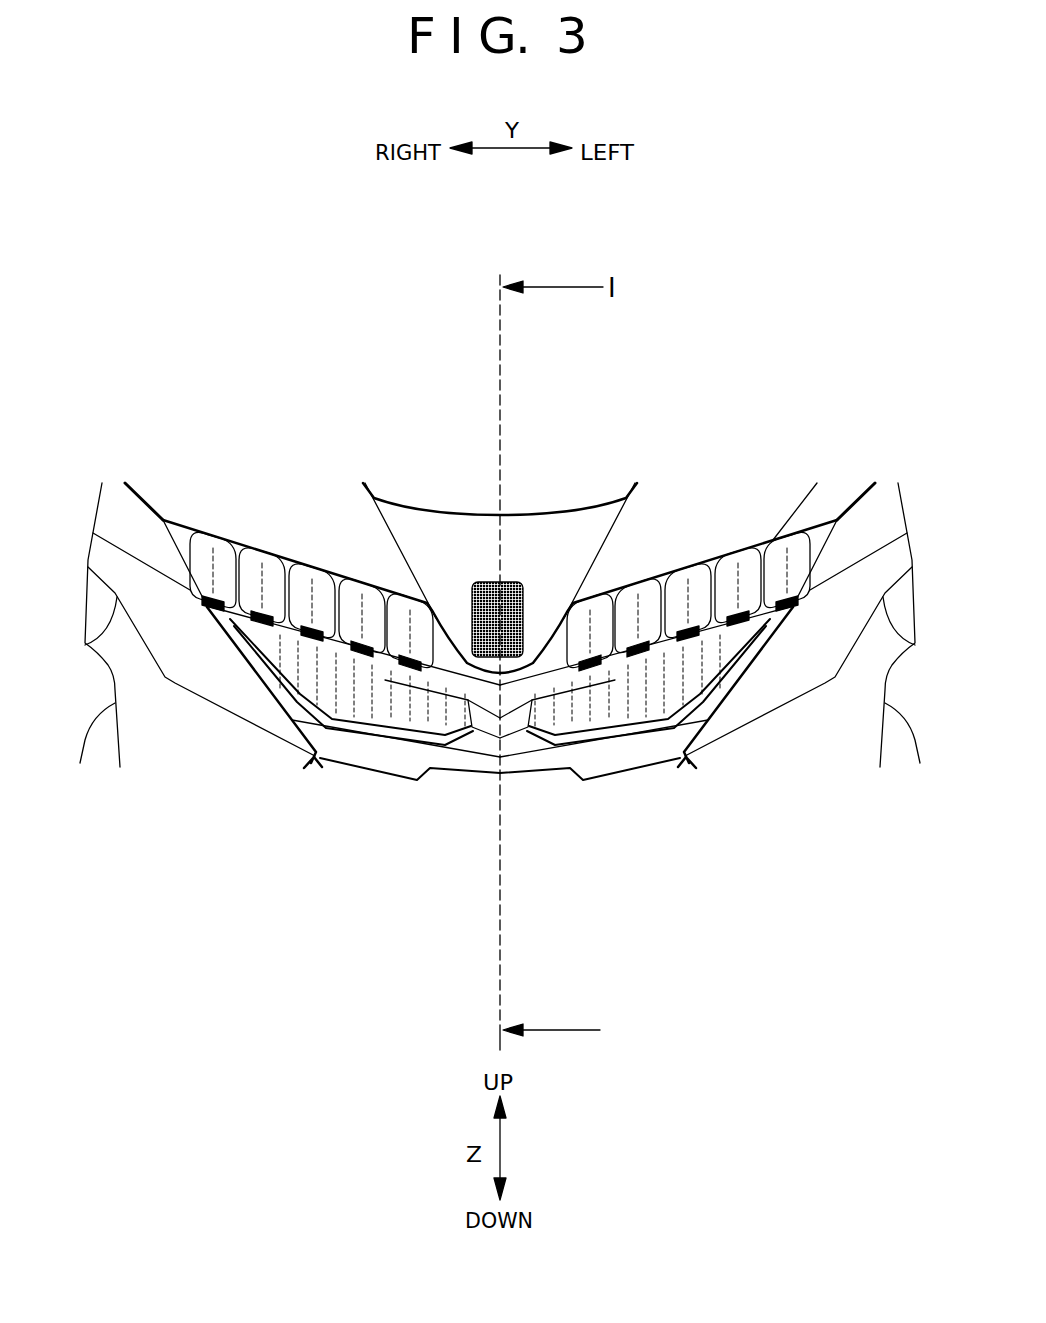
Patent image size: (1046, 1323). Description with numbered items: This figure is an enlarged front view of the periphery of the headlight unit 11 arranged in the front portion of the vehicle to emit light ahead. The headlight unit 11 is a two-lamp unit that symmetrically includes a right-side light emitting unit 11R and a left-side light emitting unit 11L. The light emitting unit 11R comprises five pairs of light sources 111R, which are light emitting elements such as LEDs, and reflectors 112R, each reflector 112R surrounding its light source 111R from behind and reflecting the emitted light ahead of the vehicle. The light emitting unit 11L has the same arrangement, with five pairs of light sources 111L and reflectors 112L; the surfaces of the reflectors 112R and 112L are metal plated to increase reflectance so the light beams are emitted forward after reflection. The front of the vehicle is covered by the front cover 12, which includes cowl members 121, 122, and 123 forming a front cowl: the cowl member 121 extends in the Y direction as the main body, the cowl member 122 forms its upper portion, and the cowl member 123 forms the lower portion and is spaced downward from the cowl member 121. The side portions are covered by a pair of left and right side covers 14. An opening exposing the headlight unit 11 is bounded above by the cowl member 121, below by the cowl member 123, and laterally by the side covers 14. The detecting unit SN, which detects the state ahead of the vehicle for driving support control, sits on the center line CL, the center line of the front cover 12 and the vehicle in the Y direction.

The headlight unit 11 is at (559, 765).
The right-side light emitting unit 11R is at (292, 548).
The left-side light emitting unit 11L is at (703, 545).
The light source 111R is at (195, 600).
The light source 111L is at (643, 600).
The reflector 112R is at (184, 535).
The reflector 112L is at (658, 574).
The front cover 12 is at (789, 446).
The side cover 14 is at (207, 683).
The cowl member 121 is at (575, 550).
The cowl member 122 is at (560, 478).
The cowl member 123 is at (613, 760).
The detecting unit SN is at (490, 590).
The center line CL is at (497, 293).